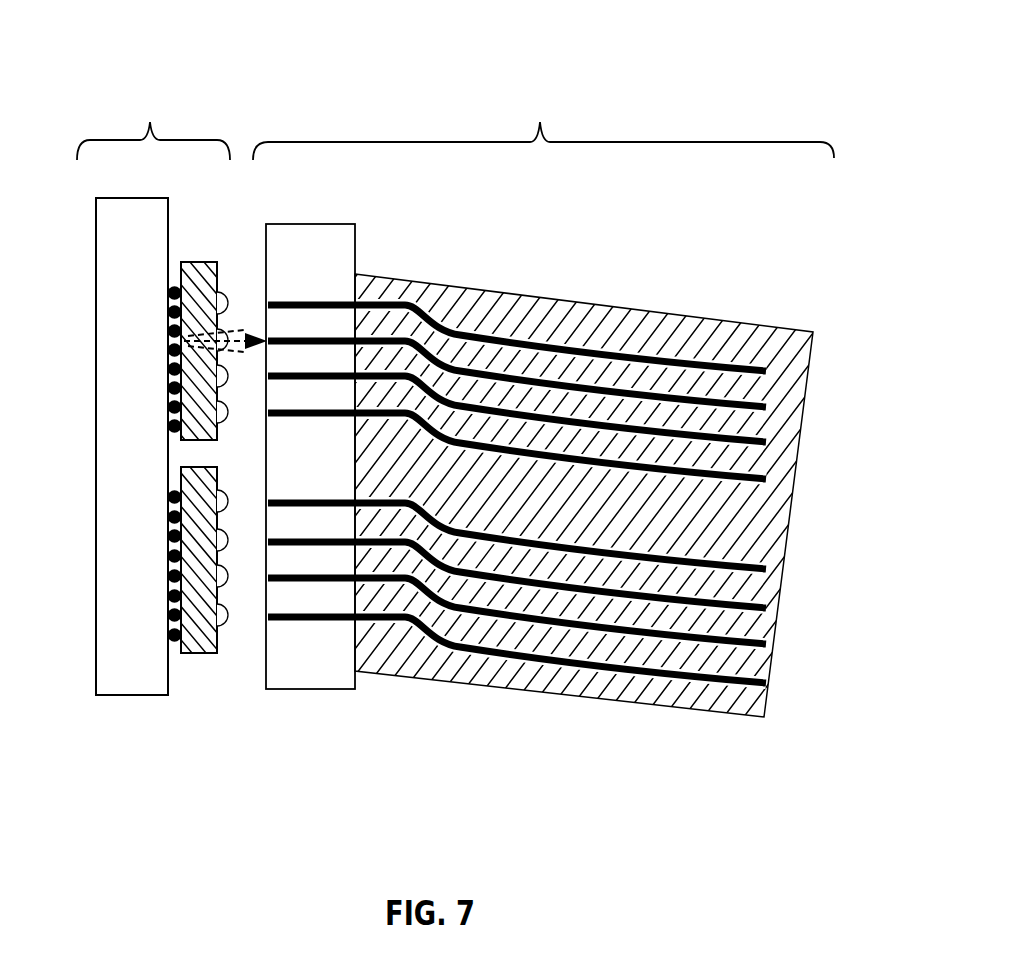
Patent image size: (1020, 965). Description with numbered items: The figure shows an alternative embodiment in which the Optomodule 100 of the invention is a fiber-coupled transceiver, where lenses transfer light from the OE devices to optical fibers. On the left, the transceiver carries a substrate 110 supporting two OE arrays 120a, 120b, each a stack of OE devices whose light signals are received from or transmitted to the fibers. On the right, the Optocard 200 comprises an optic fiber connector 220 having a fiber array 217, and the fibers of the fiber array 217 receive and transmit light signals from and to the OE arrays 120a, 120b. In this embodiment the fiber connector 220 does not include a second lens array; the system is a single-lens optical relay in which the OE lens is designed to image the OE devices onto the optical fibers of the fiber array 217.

The Optomodule 100 is at (181, 112).
The Optocard 200 is at (568, 111).
The substrate 110 is at (122, 692).
The OE array 120a is at (217, 262).
The OE array 120b is at (200, 653).
The optic fiber connector 220 is at (338, 238).
The fiber array 217 is at (780, 338).